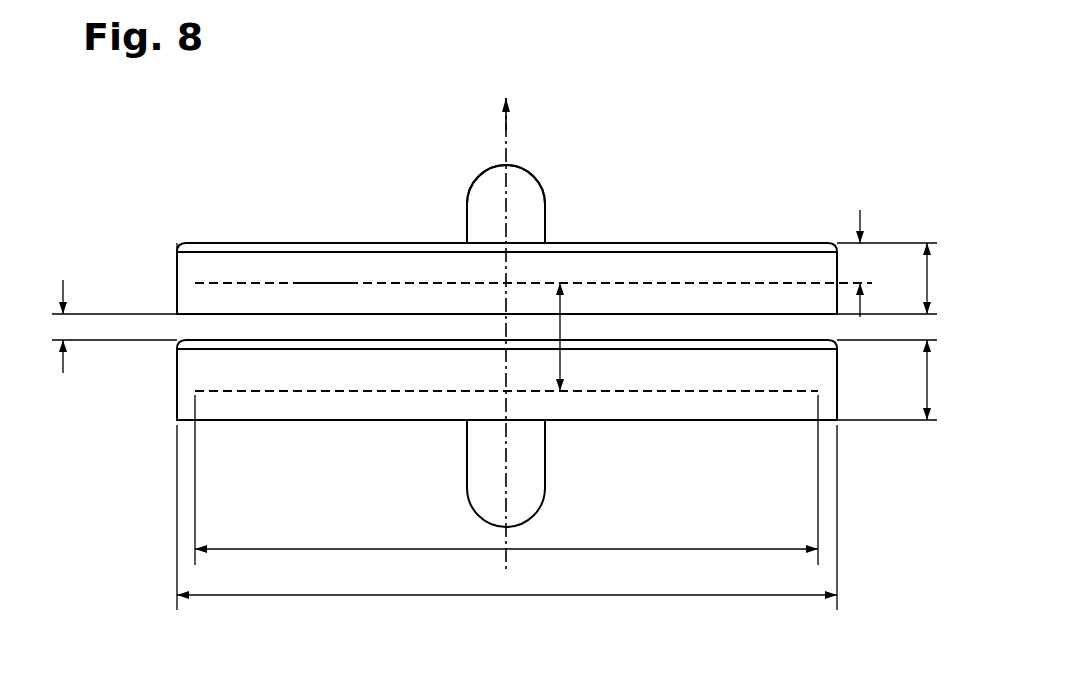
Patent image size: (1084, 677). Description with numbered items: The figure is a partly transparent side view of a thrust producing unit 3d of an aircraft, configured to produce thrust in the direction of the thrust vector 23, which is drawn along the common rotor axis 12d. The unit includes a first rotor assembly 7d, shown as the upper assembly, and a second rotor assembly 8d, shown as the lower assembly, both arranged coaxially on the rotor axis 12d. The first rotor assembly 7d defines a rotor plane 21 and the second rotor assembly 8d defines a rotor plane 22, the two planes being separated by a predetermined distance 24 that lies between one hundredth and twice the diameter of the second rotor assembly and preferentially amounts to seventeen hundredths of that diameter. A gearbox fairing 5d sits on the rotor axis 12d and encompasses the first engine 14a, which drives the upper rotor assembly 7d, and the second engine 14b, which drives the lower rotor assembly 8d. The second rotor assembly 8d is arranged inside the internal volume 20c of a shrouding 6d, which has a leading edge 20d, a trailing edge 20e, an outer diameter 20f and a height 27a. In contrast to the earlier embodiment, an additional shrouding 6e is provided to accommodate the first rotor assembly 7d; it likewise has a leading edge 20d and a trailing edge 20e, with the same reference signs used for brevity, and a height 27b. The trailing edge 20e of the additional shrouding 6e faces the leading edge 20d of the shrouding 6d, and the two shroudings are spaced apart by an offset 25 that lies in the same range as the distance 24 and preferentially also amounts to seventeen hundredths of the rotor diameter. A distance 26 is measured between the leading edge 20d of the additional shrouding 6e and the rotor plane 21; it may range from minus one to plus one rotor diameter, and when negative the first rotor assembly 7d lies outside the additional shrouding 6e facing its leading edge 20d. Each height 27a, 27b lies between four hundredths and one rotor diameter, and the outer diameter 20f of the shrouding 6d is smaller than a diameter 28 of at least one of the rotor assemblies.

The thrust producing unit 3d is at (242, 202).
The gearbox fairing 5d is at (528, 207).
The shrouding 6d is at (813, 375).
The additional shrouding 6e is at (195, 266).
The first rotor assembly 7d is at (325, 283).
The second rotor assembly 8d is at (297, 402).
The rotor axis 12d is at (510, 150).
The first engine 14a is at (483, 178).
The second engine 14b is at (472, 493).
The internal volume 20c is at (400, 402).
The leading edge 20d is at (383, 340).
The trailing edge 20e is at (222, 420).
The outer diameter 20f is at (647, 595).
The rotor plane 21 is at (177, 280).
The rotor plane 22 is at (177, 391).
The thrust vector 23 is at (505, 127).
The predetermined distance 24 is at (560, 322).
The offset 25 is at (63, 325).
The distance 26 is at (860, 262).
The height 27a is at (927, 278).
The height 27b is at (927, 380).
The diameter 28 is at (585, 549).